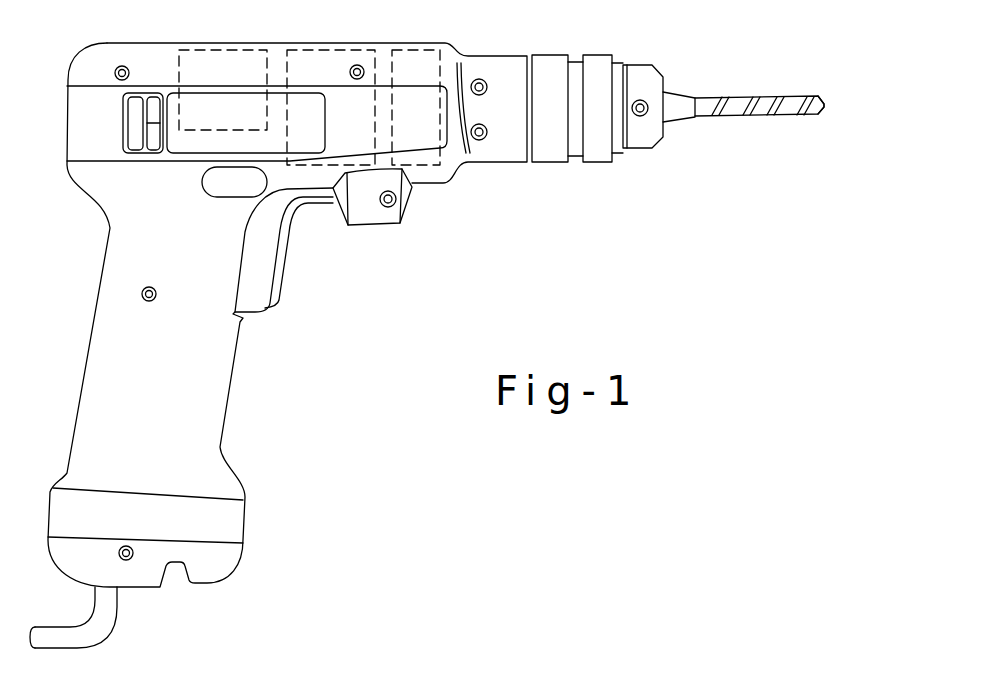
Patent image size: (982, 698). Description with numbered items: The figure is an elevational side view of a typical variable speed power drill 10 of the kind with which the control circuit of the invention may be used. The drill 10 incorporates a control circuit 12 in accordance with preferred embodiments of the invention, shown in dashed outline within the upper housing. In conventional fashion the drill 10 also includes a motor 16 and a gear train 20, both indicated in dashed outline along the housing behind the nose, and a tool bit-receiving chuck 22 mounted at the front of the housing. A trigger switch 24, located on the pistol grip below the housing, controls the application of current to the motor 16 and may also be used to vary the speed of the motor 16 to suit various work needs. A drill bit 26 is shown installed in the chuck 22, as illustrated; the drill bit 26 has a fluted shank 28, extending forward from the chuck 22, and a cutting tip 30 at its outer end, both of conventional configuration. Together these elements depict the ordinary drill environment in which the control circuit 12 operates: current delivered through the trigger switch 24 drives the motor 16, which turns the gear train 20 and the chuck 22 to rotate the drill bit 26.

The power drill 10 is at (538, 244).
The control circuit 12 is at (168, 54).
The motor 16 is at (330, 32).
The gear train 20 is at (406, 31).
The tool bit-receiving chuck 22 is at (552, 68).
The trigger switch 24 is at (273, 282).
The drill bit 26 is at (765, 113).
The fluted shank 28 is at (753, 92).
The cutting tip 30 is at (820, 97).